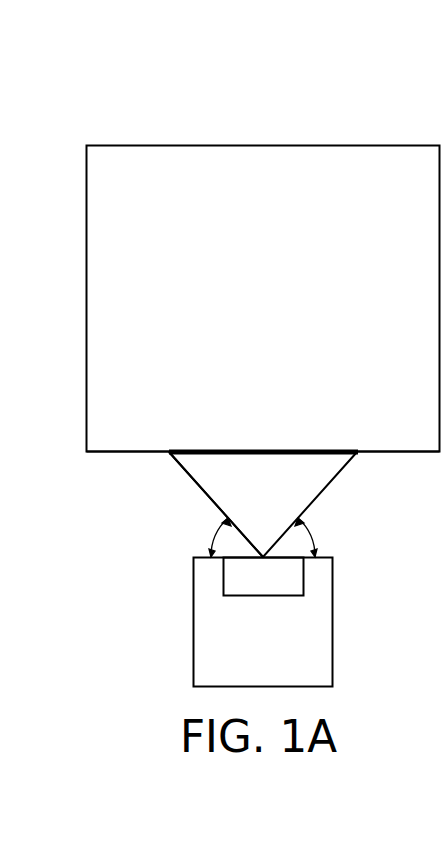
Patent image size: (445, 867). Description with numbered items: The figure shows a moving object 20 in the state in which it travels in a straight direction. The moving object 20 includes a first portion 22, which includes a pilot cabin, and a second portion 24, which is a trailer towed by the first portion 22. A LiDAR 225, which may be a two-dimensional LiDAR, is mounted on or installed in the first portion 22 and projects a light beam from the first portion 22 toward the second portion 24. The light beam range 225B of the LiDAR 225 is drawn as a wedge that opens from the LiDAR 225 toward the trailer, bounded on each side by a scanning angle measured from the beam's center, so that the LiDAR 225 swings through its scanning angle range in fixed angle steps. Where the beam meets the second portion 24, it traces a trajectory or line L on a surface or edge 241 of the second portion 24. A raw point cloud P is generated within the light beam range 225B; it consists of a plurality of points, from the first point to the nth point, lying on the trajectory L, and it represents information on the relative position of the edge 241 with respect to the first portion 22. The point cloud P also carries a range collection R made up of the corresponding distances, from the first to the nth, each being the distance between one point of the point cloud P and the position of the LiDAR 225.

The moving object 20 is at (108, 73).
The second portion 24 is at (275, 294).
The edge 241 is at (408, 453).
The first portion 22 is at (275, 666).
The LiDAR 225 is at (282, 588).
The light beam range 225B is at (336, 475).
The trajectory L is at (191, 455).
The range collection R is at (323, 482).
The point cloud P is at (407, 408).